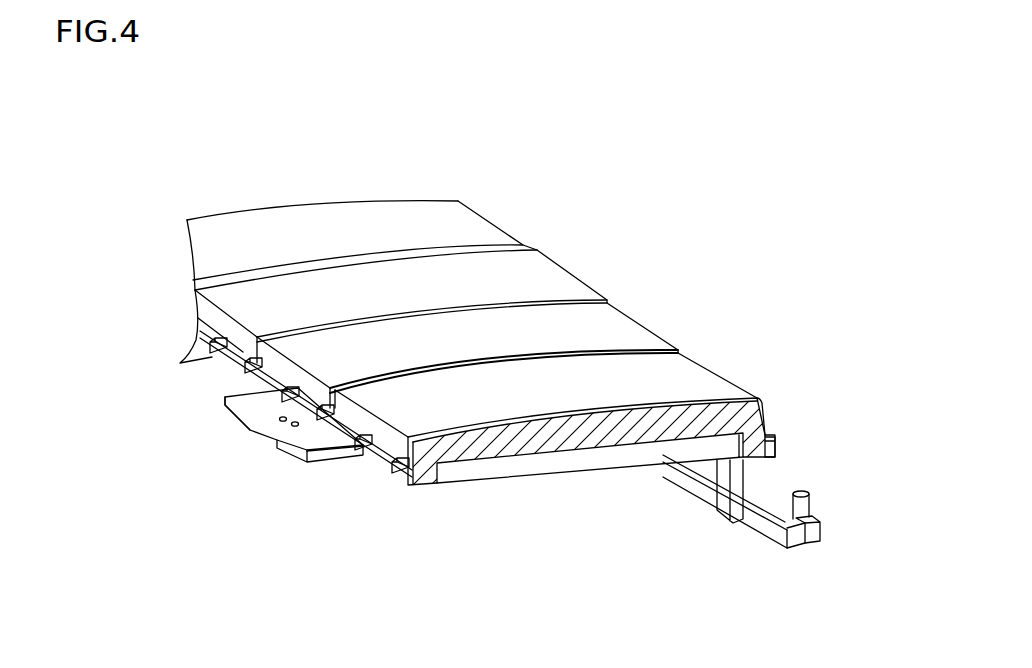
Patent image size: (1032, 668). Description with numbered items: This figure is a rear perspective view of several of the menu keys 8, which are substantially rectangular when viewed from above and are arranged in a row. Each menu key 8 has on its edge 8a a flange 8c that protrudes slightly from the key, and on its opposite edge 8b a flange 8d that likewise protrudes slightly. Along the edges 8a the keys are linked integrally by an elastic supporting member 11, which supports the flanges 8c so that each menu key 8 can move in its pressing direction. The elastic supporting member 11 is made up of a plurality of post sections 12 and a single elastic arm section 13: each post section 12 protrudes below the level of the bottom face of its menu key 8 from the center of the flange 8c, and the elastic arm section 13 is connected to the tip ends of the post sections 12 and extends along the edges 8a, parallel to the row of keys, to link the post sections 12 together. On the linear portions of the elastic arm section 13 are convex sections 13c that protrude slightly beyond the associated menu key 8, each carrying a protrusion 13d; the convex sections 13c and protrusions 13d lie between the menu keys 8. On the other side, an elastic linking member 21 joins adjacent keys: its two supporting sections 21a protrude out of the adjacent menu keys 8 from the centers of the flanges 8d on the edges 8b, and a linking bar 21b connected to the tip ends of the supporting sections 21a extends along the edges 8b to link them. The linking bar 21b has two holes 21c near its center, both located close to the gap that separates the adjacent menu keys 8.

The menu key 8 is at (415, 268).
The edge 8a is at (765, 418).
The edge 8b is at (387, 437).
The flange 8c is at (777, 452).
The flange 8d is at (381, 467).
The elastic supporting member 11 is at (766, 542).
The post section 12 is at (723, 487).
The elastic arm section 13 is at (684, 493).
The convex section 13c is at (820, 533).
The protrusion 13d is at (813, 507).
The elastic linking member 21 is at (257, 475).
The supporting section 21a is at (332, 456).
The linking bar 21b is at (234, 414).
The hole 21c is at (282, 424).